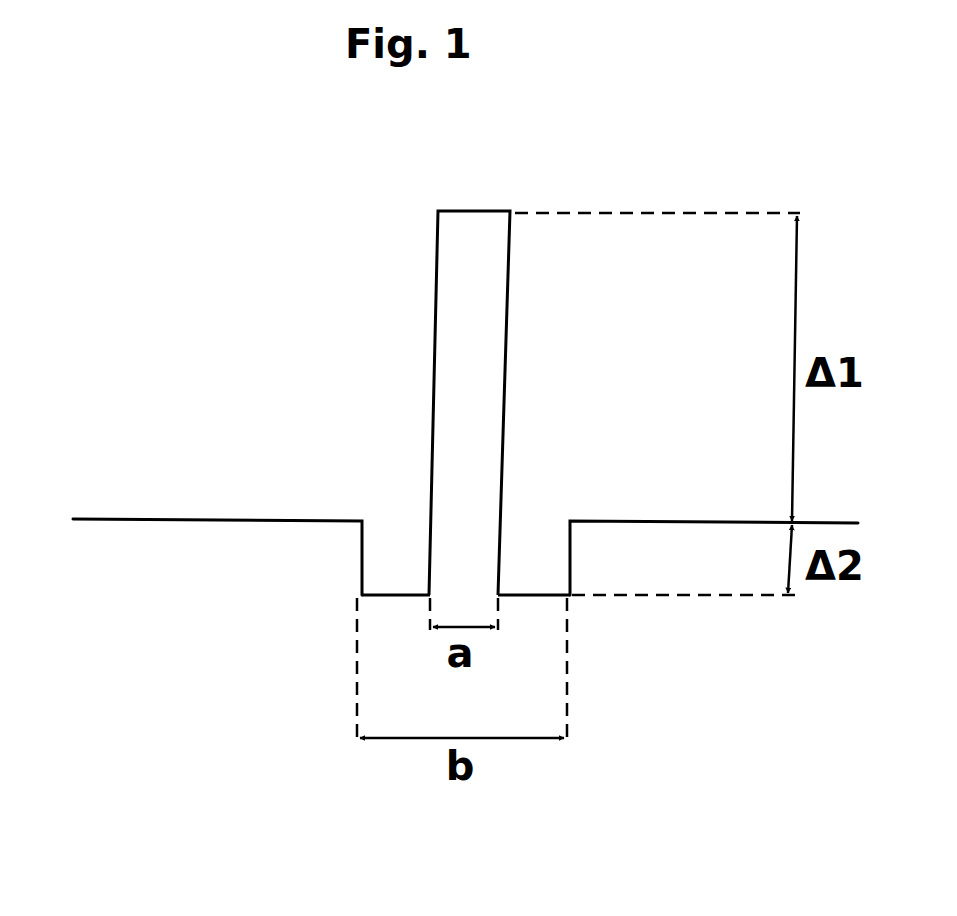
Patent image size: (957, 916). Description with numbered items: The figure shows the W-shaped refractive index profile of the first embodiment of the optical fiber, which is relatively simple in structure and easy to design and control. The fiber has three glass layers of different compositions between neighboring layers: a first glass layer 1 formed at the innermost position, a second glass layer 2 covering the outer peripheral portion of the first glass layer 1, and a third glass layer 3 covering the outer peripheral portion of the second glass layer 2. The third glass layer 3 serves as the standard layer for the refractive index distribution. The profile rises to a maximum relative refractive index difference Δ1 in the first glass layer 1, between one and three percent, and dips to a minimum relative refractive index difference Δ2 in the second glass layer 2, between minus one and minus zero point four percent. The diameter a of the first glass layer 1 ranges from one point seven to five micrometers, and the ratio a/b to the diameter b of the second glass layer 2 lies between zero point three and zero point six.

The first glass layer 1 is at (478, 211).
The second glass layer 2 is at (395, 590).
The third glass layer 3 is at (253, 520).